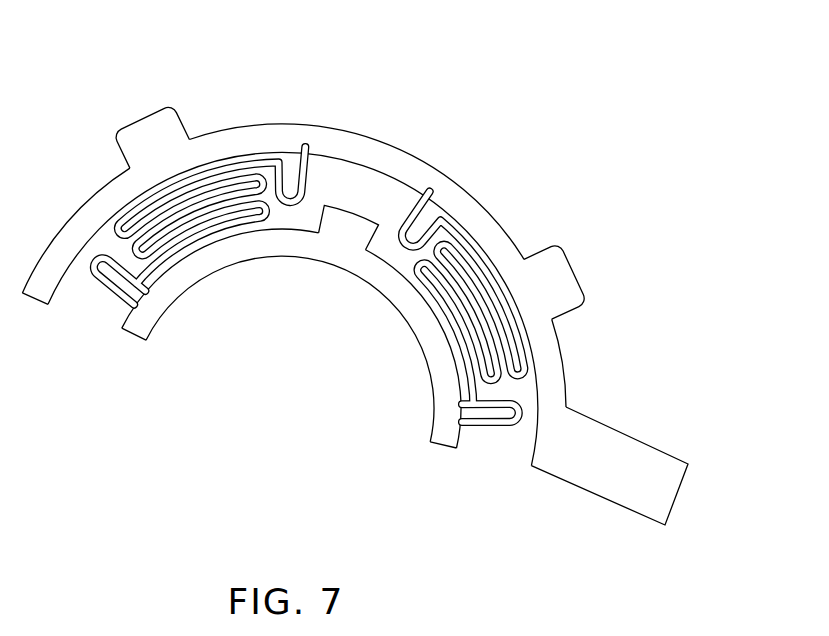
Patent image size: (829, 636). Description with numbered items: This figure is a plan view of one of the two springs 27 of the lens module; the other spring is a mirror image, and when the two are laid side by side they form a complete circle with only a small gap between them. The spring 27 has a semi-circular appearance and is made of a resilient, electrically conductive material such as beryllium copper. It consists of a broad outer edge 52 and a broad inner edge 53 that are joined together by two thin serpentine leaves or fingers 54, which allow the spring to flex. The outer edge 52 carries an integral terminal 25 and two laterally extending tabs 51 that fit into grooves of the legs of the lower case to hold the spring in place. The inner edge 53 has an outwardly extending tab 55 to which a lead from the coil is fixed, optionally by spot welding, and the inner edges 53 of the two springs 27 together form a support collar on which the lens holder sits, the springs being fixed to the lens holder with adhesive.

The spring 27 is at (367, 297).
The laterally extending tab 51 is at (150, 135).
The outer edge 52 is at (400, 160).
The inner edge 53 is at (222, 254).
The serpentine leaf 54 is at (106, 292).
The outwardly extending tab 55 is at (345, 236).
The terminal 25 is at (612, 486).